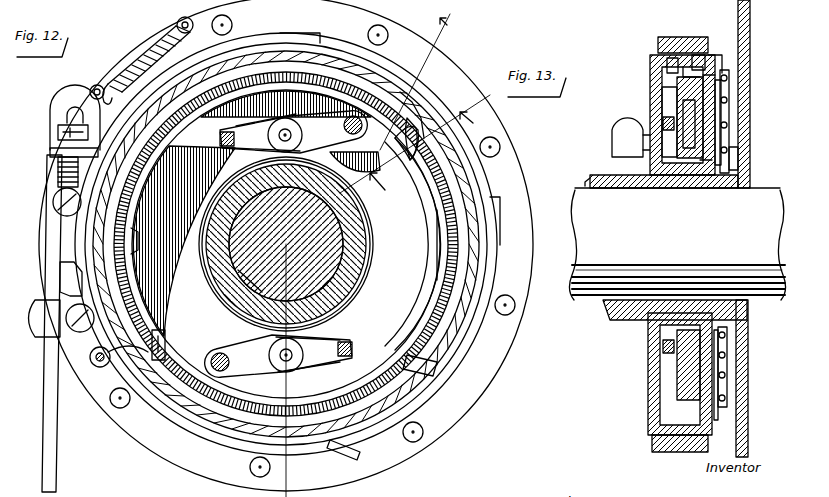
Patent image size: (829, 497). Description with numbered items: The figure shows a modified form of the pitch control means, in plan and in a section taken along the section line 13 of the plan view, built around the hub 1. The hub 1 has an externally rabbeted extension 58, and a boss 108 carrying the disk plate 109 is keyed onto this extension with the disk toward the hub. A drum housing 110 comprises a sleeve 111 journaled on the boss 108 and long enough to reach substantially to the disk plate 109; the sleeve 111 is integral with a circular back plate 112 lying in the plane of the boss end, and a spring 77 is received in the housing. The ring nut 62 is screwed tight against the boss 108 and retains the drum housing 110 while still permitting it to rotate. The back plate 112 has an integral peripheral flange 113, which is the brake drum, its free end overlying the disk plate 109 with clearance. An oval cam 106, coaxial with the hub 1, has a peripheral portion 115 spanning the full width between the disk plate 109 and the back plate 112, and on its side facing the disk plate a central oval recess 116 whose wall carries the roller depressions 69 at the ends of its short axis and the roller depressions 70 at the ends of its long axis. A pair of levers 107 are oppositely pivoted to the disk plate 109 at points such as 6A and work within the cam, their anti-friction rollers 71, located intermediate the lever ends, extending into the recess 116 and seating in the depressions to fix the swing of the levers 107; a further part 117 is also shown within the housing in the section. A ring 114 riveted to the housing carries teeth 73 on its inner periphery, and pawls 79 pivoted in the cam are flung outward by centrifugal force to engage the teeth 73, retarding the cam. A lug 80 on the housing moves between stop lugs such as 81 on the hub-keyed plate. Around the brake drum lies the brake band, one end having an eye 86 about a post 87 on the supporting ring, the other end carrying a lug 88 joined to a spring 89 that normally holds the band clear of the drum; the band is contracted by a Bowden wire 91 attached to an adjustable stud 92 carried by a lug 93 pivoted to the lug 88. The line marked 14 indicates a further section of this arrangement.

In FIG. 13, the hub 1 is at (611, 170).
In FIG. 12, the lever pad 6A is at (359, 118).
In FIG. 12, the section line 13— 13 is at (428, 77).
In FIG. 12, the section line 14- 14 is at (416, 149).
In FIG. 12, the hub extension 58 is at (347, 253).
In FIG. 13, the hub extension 58 is at (683, 188).
In FIG. 13, the ring nut 62 is at (750, 170).
In FIG. 12, the roller depressions 69 is at (289, 118).
In FIG. 12, the roller depressions 70 is at (133, 240).
In FIG. 12, the anti-friction rollers 71 is at (276, 122).
In FIG. 13, the anti-friction rollers 71 is at (727, 102).
In FIG. 12, the teeth 73 is at (405, 90).
In FIG. 13, the spring 77 is at (727, 368).
In FIG. 12, the pawls 79 is at (157, 362).
In FIG. 13, the lug 80 is at (668, 62).
In FIG. 13, the stop lug 81 is at (658, 72).
In FIG. 12, the eye 86 is at (93, 364).
In FIG. 12, the post 87 is at (101, 367).
In FIG. 12, the lug 88 is at (90, 90).
In FIG. 12, the spring 89 is at (115, 52).
In FIG. 12, the Bowden wire 91 is at (56, 278).
In FIG. 12, the adjustable stud 92 is at (60, 166).
In FIG. 12, the lug 93 is at (60, 117).
In FIG. 12, the oval cam 106 is at (413, 187).
In FIG. 13, the oval cam 106 is at (695, 87).
In FIG. 12, the levers 107 is at (311, 122).
In FIG. 13, the levers 107 is at (663, 123).
In FIG. 12, the boss 108 is at (360, 237).
In FIG. 13, the boss 108 is at (667, 182).
In FIG. 12, the disk plate 109 is at (427, 207).
In FIG. 13, the disk plate 109 is at (654, 378).
In FIG. 13, the drum housing 110 is at (730, 115).
In FIG. 12, the sleeve 111 is at (367, 213).
In FIG. 13, the sleeve 111 is at (696, 162).
In FIG. 13, the back plate 112 is at (722, 90).
In FIG. 12, the peripheral flange 113 is at (425, 136).
In FIG. 13, the peripheral flange 113 is at (670, 63).
In FIG. 12, the ring 114 is at (420, 128).
In FIG. 13, the ring 114 is at (686, 82).
In FIG. 12, the peripheral portion 115 is at (85, 495).
In FIG. 13, the peripheral portion 115 is at (723, 53).
In FIG. 12, the central oval recess 116 is at (432, 205).
In FIG. 13, the central oval recess 116 is at (690, 128).
In FIG. 13, the slide 117 is at (667, 103).